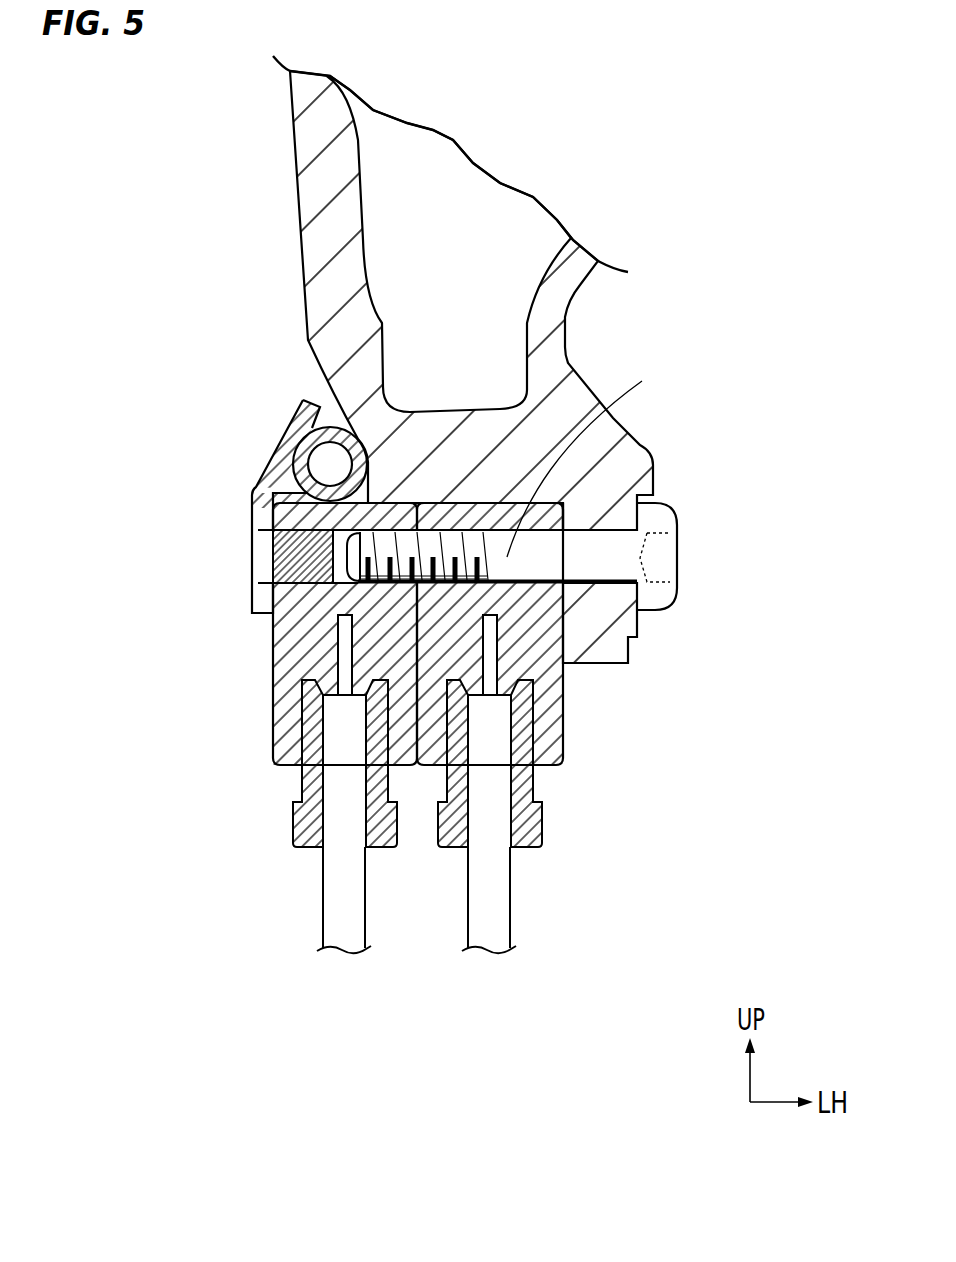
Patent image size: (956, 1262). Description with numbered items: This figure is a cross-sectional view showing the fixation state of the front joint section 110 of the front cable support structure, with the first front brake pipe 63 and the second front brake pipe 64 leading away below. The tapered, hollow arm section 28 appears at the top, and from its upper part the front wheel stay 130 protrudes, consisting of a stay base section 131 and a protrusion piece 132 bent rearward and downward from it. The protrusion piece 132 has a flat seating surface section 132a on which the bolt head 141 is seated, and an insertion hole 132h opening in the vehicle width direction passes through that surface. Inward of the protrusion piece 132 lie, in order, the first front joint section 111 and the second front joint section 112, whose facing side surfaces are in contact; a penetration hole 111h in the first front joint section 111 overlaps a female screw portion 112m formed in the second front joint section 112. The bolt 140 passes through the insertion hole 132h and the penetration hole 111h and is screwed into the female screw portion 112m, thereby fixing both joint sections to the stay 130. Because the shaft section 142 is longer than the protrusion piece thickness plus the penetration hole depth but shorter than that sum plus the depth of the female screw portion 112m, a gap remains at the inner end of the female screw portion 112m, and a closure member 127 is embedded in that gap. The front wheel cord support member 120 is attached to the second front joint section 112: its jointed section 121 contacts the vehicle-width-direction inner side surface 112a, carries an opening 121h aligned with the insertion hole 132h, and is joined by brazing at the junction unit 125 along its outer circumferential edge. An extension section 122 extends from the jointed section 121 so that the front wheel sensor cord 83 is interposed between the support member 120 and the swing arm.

The arm section 28 is at (312, 202).
The first front brake pipe 63 is at (507, 910).
The second front brake pipe 64 is at (360, 908).
The front wheel sensor cord 83 is at (316, 441).
The front joint section 110 is at (411, 731).
The first front joint section 111 is at (476, 736).
The penetration hole 111h is at (532, 579).
The second front joint section 112 is at (255, 707).
The vehicle-width-direction inner side surface 112a is at (272, 732).
The female screw portion 112m is at (340, 558).
The front wheel cord support member 120 is at (205, 506).
The jointed section 121 is at (175, 548).
The opening 121h is at (260, 543).
The extension section 122 is at (285, 452).
The junction unit 125 is at (265, 622).
The closure member 127 is at (287, 555).
The front wheel stay 130 is at (703, 524).
The stay base section 131 is at (633, 456).
The protrusion piece 132 is at (718, 551).
The seating surface section 132a is at (637, 590).
The insertion hole 132h is at (610, 580).
The bolt 140 is at (727, 551).
The bolt head 141 is at (670, 527).
The shaft section 142 is at (633, 457).